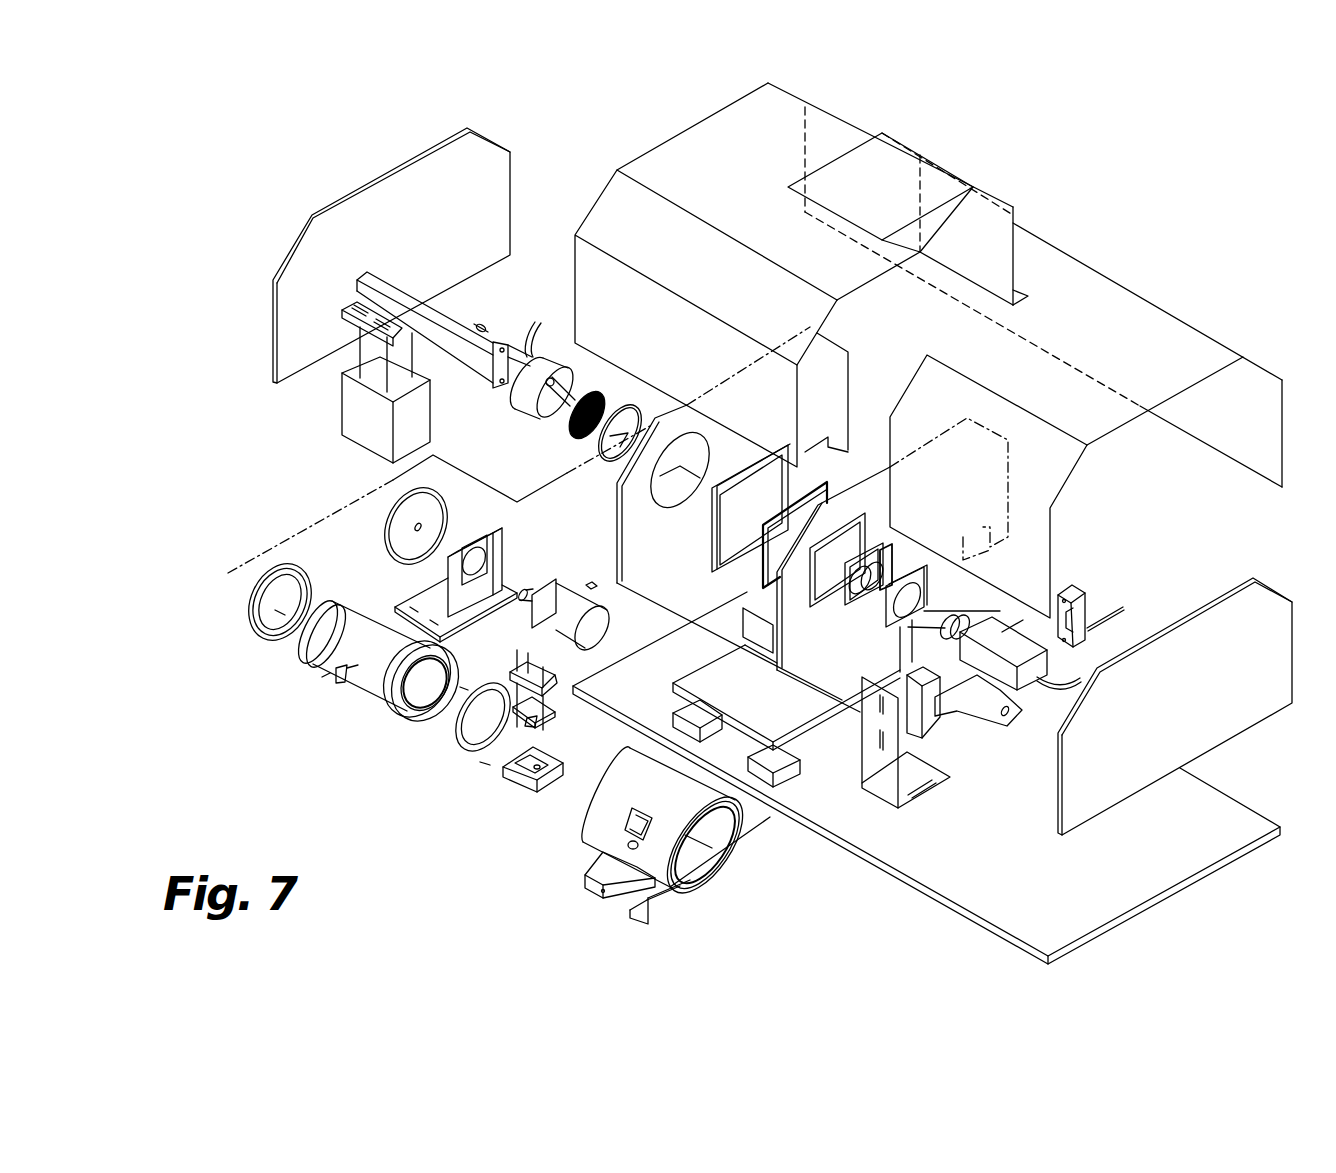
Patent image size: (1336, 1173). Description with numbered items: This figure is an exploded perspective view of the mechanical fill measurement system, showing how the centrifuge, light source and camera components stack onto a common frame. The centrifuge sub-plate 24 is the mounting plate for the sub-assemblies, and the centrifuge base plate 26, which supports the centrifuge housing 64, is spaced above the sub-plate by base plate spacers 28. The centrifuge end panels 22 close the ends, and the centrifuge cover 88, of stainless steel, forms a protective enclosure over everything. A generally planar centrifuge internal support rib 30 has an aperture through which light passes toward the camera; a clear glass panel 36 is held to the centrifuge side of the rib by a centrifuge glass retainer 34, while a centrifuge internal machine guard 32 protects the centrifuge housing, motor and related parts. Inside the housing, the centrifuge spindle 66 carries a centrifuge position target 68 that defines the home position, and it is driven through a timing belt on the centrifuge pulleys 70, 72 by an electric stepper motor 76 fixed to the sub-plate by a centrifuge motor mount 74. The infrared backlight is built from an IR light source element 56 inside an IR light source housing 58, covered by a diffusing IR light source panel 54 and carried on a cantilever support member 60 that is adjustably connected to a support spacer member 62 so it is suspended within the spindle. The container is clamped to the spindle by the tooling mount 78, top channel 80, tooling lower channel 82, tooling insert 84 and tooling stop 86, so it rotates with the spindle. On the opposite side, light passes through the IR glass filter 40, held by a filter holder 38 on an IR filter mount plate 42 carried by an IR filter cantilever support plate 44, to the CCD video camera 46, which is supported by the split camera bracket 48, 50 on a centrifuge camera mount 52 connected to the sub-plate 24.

The centrifuge end panel 22 is at (272, 317).
The centrifuge sub-plate 24 is at (898, 878).
The centrifuge base plate 26 is at (817, 725).
The base plate spacer 28 is at (782, 783).
The centrifuge internal support rib 30 is at (778, 667).
The centrifuge internal machine guard 32 is at (848, 362).
The centrifuge glass retainer 34 is at (710, 572).
The clear glass panel 36 is at (827, 482).
The filter holder 38 is at (884, 543).
The IR glass filter 40 is at (875, 602).
The IR filter mount plate 42 is at (920, 570).
The IR filter cantilever support plate 44 is at (975, 718).
The CCD video camera 46 is at (1028, 692).
The split camera bracket 48 is at (1077, 588).
The split camera bracket 50 is at (930, 733).
The centrifuge camera mount 52 is at (927, 797).
The IR light source panel 54 is at (597, 443).
The IR light source element 56 is at (563, 427).
The IR light source housing 58 is at (523, 415).
The cantilever support member 60 is at (460, 322).
The support spacer member 62 is at (363, 448).
The centrifuge housing 64 is at (670, 905).
The centrifuge spindle 66 is at (382, 703).
The centrifuge position target 68 is at (335, 680).
The centrifuge pulley 70 is at (258, 637).
The centrifuge pulley 72 is at (414, 530).
The centrifuge motor mount 74 is at (488, 542).
The electric stepper motor 76 is at (603, 620).
The tooling mount 78 is at (458, 748).
The top channel 80 is at (523, 655).
The tooling lower channel 82 is at (522, 787).
The tooling insert 84 is at (555, 715).
The tooling stop 86 is at (533, 725).
The centrifuge cover 88 is at (1217, 340).